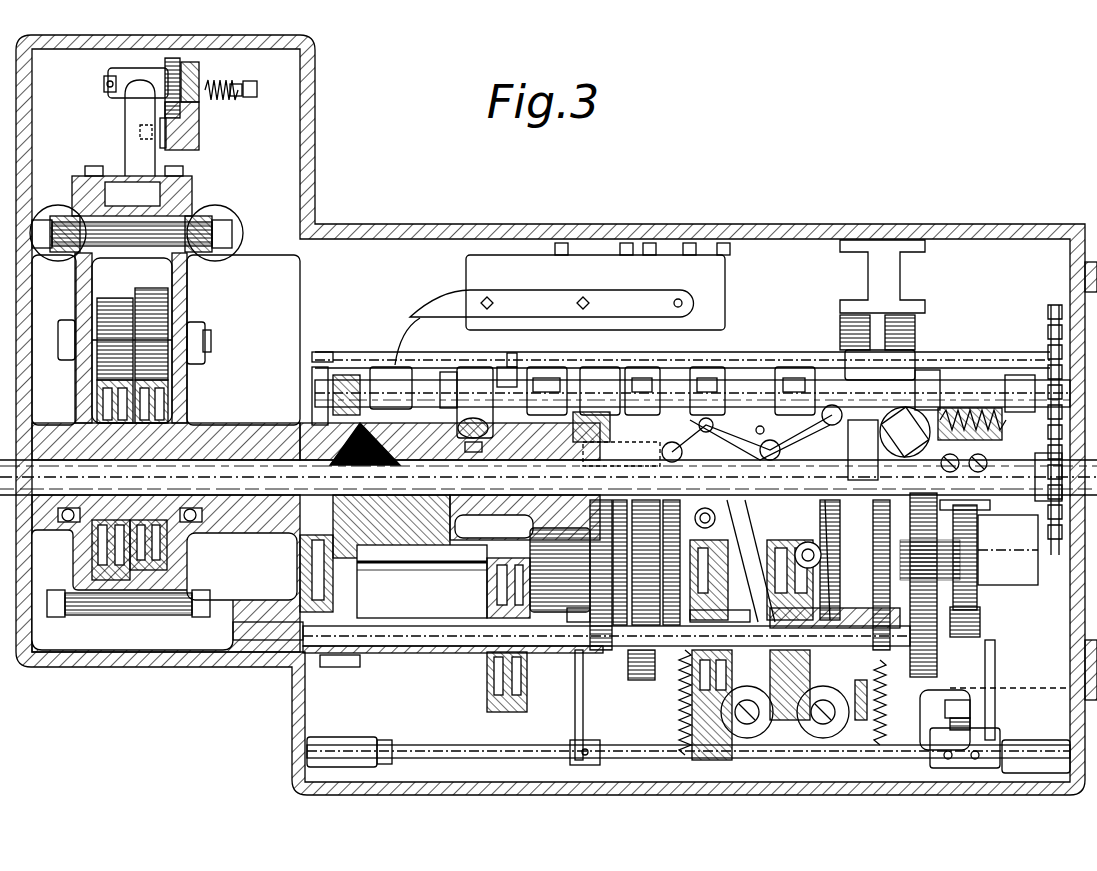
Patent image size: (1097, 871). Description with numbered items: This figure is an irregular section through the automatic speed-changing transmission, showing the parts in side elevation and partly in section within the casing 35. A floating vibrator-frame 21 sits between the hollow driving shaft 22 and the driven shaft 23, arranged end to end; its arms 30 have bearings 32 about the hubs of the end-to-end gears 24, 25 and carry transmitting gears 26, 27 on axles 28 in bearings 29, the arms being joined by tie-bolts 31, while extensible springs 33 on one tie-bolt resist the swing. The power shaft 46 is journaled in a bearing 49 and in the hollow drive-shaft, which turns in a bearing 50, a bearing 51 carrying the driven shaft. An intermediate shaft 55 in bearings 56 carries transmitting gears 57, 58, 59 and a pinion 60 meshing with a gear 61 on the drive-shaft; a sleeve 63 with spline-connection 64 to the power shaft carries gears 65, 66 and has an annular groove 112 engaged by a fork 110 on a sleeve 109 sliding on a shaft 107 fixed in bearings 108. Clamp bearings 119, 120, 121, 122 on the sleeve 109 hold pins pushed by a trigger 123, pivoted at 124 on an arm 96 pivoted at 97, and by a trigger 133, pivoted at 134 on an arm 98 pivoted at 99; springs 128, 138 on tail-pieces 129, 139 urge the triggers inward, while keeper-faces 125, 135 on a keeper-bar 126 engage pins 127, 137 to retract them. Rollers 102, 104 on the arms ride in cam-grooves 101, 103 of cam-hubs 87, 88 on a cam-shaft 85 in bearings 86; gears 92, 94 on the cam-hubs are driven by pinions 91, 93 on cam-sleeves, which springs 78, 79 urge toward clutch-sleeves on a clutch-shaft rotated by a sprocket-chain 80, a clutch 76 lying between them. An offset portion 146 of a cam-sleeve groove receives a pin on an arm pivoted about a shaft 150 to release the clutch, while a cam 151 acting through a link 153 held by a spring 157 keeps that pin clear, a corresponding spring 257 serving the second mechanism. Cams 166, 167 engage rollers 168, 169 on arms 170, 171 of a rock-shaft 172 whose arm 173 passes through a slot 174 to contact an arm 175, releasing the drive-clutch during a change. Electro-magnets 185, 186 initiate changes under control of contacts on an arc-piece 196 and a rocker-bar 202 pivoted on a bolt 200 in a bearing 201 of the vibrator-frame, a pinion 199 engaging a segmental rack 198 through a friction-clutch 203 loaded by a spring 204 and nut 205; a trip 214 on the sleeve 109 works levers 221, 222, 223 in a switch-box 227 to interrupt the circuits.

The vibrator-frame 21 is at (195, 192).
The driving shaft 22 is at (238, 445).
The driven shaft 23 is at (45, 525).
The gear 24 is at (155, 572).
The gear 25 is at (115, 580).
The transmitting gear 26 is at (160, 290).
The transmitting gear 27 is at (115, 298).
The axle 28 is at (211, 340).
The bearing 29 is at (68, 320).
The arm 30 is at (190, 290).
The tie-bolt 31 is at (215, 250).
The bearing 32 is at (62, 425).
The extensible spring 33 is at (55, 206).
The casing 35 is at (330, 224).
The power shaft 46 is at (1040, 501).
The bearing 49 is at (1068, 545).
The bearing 50 is at (260, 533).
The bearing 51 is at (36, 535).
The intermediate shaft 55 is at (425, 650).
The bearing 56 is at (320, 668).
The transmitting gear 57 is at (487, 700).
The transmitting gear 58 is at (680, 690).
The transmitting gear 59 is at (800, 722).
The transmitting pinion 60 is at (358, 668).
The gear 61 is at (355, 590).
The sleeve 63 is at (500, 538).
The spline-connection 64 is at (448, 552).
The gear 65 is at (425, 555).
The gear 66 is at (467, 565).
The clutch 76 is at (852, 430).
The spring 78 is at (965, 405).
The spring 79 is at (625, 366).
The sprocket-chain 80 is at (1052, 305).
The cam-shaft 85 is at (422, 581).
The bearing 86 is at (300, 575).
The cam-hub 87 is at (980, 568).
The cam-hub 88 is at (590, 556).
The pinion 91 is at (938, 375).
The gear 92 is at (937, 665).
The pinion 93 is at (615, 418).
The gear 94 is at (628, 665).
The arm 96 is at (813, 600).
The pivot 97 is at (848, 712).
The arm 98 is at (722, 680).
The pivot 99 is at (749, 730).
The cam-groove 101 is at (832, 560).
The roller 102 is at (832, 580).
The cam-groove 103 is at (728, 565).
The roller 104 is at (728, 600).
The shaft 107 is at (1000, 380).
The bearing 108 is at (392, 367).
The sleeve 109 is at (470, 362).
The fork 110 is at (475, 409).
The annular groove 112 is at (455, 548).
The clamp bearing 119 is at (545, 367).
The clamp bearing 120 is at (640, 367).
The clamp bearing 121 is at (743, 355).
The clamp bearing 122 is at (812, 360).
The trigger 123 is at (826, 360).
The pivot 124 is at (795, 367).
The keeper-face 125 is at (915, 432).
The keeper-bar 126 is at (988, 464).
The pin 127 is at (818, 380).
The spring 128 is at (745, 560).
The tail-piece 129 is at (768, 345).
The trigger 133 is at (752, 433).
The pivot 134 is at (722, 380).
The keeper-face 135 is at (688, 345).
The pin 137 is at (621, 455).
The spring 138 is at (717, 520).
The tail-piece 139 is at (746, 400).
The offset portion 146 is at (912, 332).
The shaft 150 is at (962, 352).
The cam 151 is at (892, 705).
The link 153 is at (930, 355).
The spring 157 is at (892, 732).
The cam 166 is at (978, 532).
The cam 167 is at (600, 575).
The roller 168 is at (960, 637).
The roller 169 is at (568, 610).
The arm 170 is at (996, 680).
The arm 171 is at (575, 684).
The rock-shaft 172 is at (888, 765).
The arm 173 is at (945, 768).
The slot 174 is at (1000, 695).
The arm 175 is at (965, 706).
The electro-magnet 185 is at (910, 300).
The electro-magnet 186 is at (732, 300).
The arc-piece 196 is at (200, 135).
The segmental rack 198 is at (199, 148).
The pinion 199 is at (130, 70).
The bolt 200 is at (245, 92).
The bearing 201 is at (104, 85).
The rocker-bar 202 is at (182, 70).
The friction-clutch 203 is at (199, 100).
The spring 204 is at (240, 100).
The nut 205 is at (257, 89).
The trip 214 is at (515, 322).
The lever 221 is at (508, 353).
The lever 222 is at (595, 352).
The lever 223 is at (670, 300).
The switch-box 227 is at (598, 286).
The spring 257 is at (676, 718).